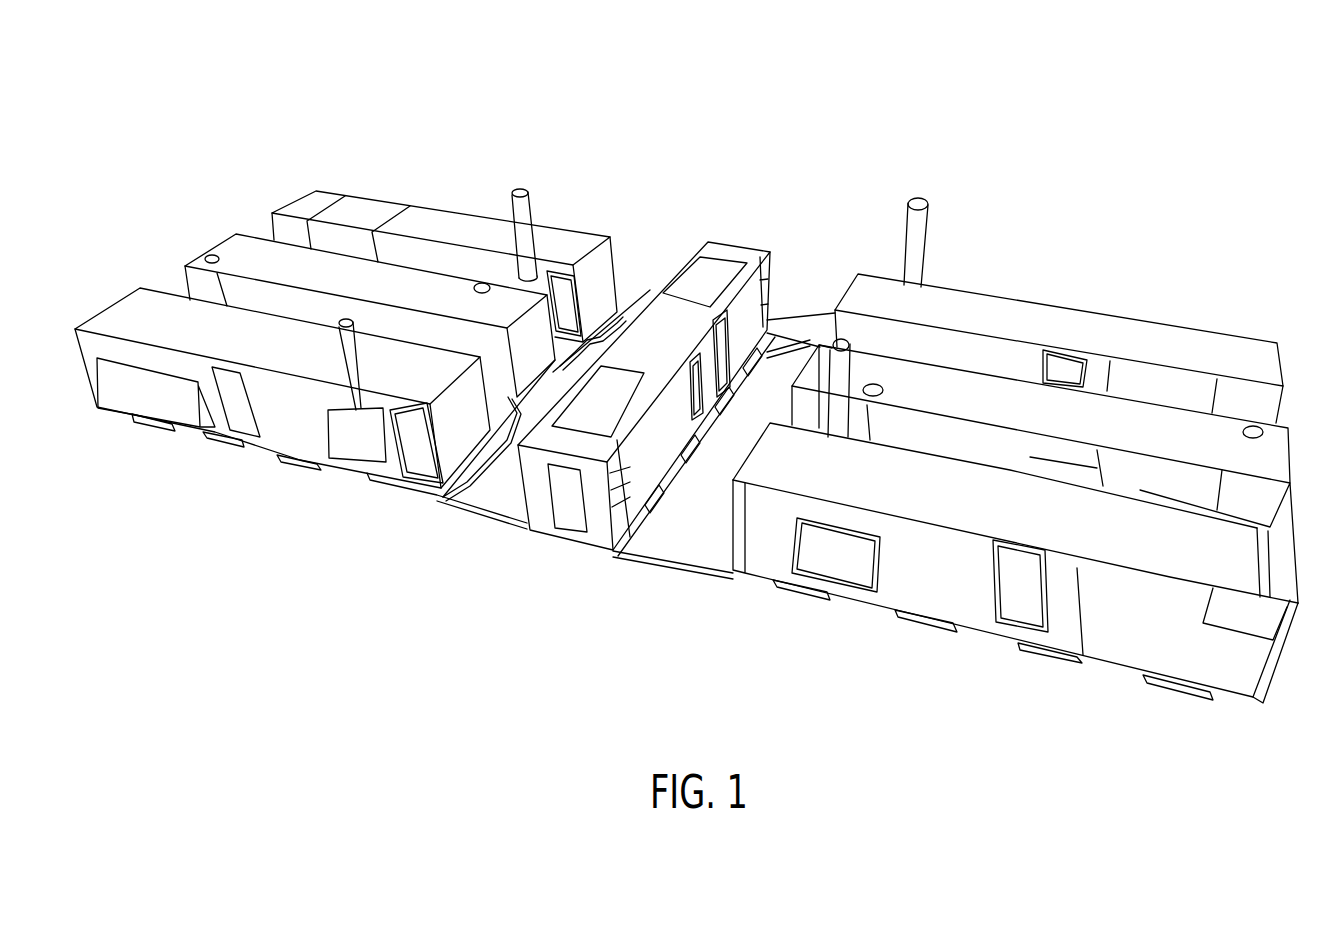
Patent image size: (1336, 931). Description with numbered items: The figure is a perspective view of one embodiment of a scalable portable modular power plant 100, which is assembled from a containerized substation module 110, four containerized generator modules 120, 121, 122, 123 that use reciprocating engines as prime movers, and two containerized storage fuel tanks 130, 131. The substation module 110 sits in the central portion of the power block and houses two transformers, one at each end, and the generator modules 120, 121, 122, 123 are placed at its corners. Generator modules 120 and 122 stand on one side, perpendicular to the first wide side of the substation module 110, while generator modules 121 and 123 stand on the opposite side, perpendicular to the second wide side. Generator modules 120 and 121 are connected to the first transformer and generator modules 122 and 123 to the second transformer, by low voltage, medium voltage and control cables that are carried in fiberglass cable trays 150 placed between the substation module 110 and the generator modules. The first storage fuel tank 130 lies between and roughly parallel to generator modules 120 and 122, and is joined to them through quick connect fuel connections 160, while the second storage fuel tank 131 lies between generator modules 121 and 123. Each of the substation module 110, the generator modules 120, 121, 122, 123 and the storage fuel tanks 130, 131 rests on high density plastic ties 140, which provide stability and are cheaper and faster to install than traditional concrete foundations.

The scalable portable modular power plant 100 is at (1014, 150).
The containerized substation module 110 is at (774, 261).
The containerized generator module 120 is at (350, 192).
The containerized generator module 121 is at (1278, 342).
The containerized generator module 122 is at (102, 314).
The containerized generator module 123 is at (1289, 658).
The containerized storage fuel tank 130 is at (207, 244).
The containerized storage fuel tank 131 is at (1289, 447).
The high density plastic ties 140 is at (217, 446).
The fiberglass cable trays 150 is at (634, 554).
The quick connect fuel connections 160 is at (599, 337).